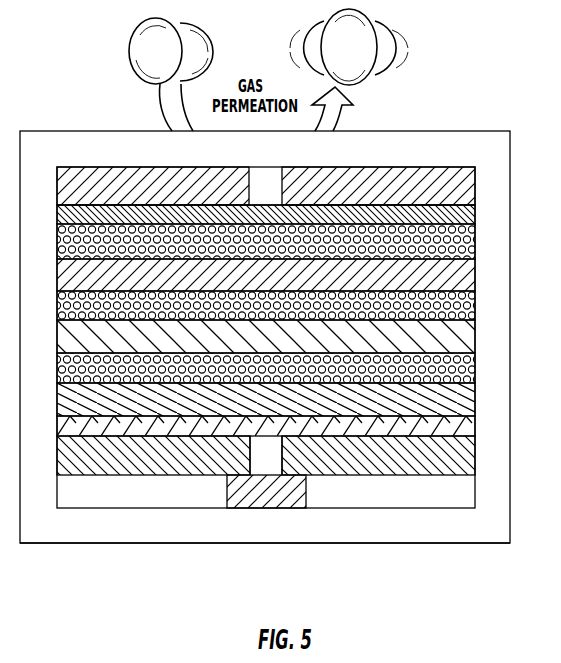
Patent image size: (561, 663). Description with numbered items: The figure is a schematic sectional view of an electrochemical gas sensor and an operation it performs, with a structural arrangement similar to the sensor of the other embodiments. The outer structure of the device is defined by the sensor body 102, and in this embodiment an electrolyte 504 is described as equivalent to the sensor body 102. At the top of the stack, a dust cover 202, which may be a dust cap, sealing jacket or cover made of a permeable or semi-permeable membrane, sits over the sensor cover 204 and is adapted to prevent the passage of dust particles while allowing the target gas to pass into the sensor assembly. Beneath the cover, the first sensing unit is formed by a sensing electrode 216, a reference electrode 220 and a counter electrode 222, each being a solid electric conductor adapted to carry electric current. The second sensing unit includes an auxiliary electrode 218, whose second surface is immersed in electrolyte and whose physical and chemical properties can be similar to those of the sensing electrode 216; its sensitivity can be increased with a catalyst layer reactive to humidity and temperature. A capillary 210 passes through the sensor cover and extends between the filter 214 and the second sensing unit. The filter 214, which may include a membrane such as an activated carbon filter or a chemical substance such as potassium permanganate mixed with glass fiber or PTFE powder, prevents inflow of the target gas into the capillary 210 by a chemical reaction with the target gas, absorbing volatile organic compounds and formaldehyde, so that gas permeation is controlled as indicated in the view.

The sensor body 102 is at (410, 543).
The dust cover 202 is at (480, 141).
The sensor cover 204 is at (453, 183).
The sensing electrode 216 is at (473, 213).
The electrolyte 504 is at (457, 277).
The reference electrode 220 is at (467, 307).
The counter electrode 222 is at (464, 345).
The auxiliary electrode 218 is at (465, 405).
The capillary 210 is at (273, 465).
The filter 214 is at (253, 500).